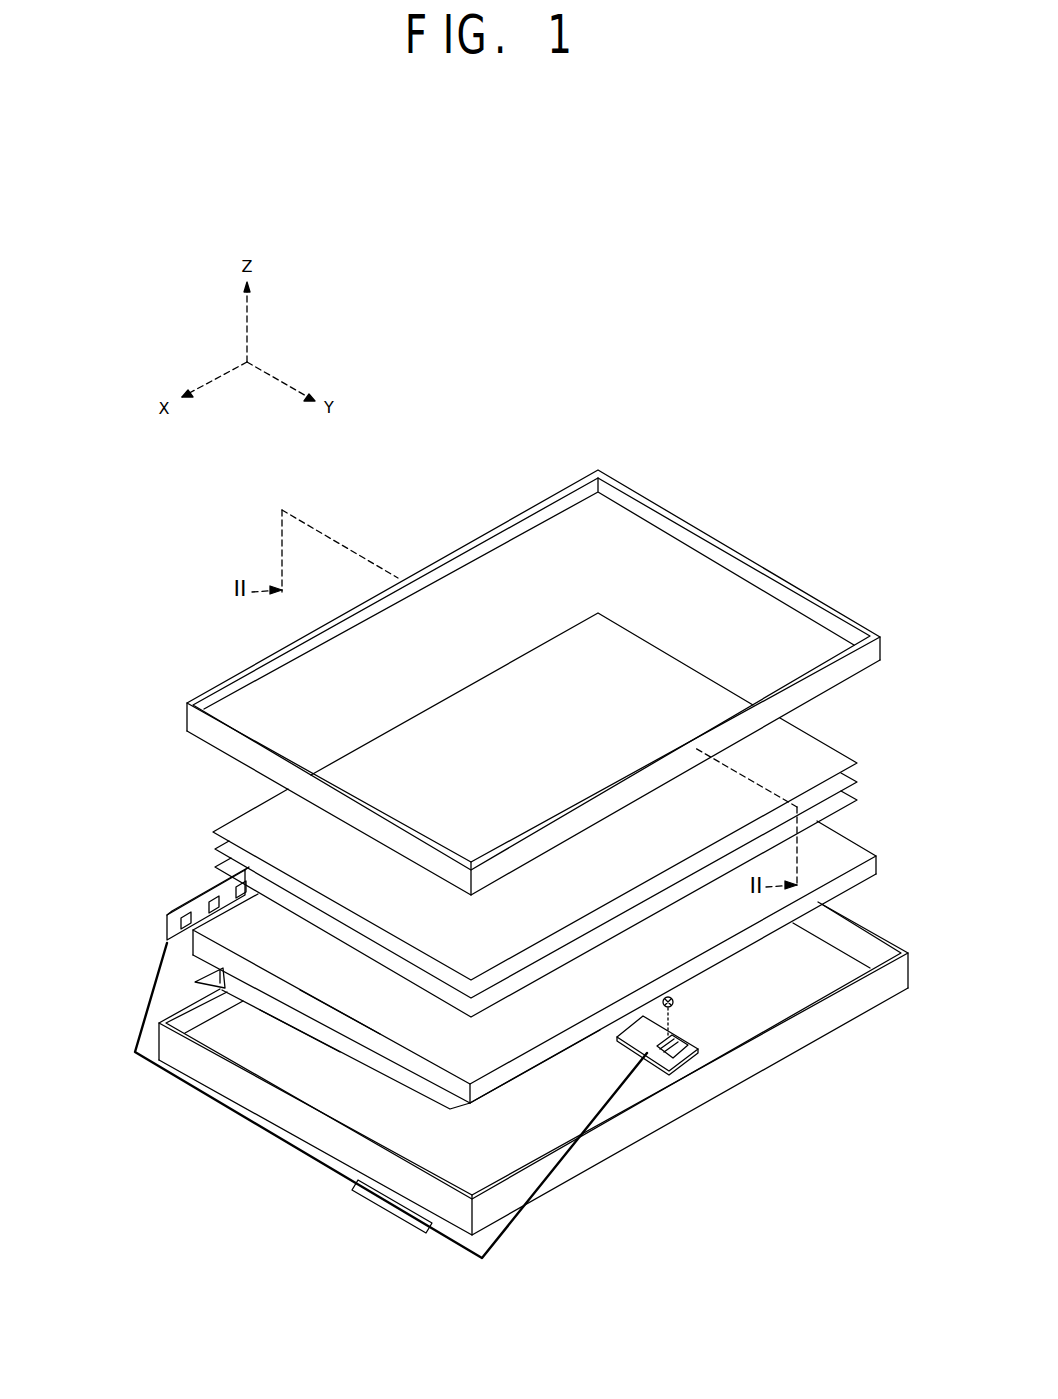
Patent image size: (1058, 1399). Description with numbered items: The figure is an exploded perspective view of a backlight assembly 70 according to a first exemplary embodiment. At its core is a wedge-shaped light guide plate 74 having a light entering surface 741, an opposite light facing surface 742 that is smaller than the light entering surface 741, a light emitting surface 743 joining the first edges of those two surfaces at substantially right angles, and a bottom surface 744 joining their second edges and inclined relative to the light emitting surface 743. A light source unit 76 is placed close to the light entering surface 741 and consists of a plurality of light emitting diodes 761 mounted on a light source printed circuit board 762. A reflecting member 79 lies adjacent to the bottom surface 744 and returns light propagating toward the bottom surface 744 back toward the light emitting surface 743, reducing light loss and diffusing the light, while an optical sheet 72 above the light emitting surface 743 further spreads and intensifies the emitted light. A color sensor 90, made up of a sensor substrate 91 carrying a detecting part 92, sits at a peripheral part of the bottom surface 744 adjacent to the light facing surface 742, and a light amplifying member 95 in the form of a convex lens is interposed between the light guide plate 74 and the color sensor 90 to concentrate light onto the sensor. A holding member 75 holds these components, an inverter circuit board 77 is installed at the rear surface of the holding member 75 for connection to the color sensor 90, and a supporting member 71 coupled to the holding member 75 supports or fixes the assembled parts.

The backlight assembly 70 is at (561, 405).
The supporting member 71 is at (185, 716).
The optical sheet 72 is at (215, 867).
The light guide plate 74 is at (478, 1058).
The light entering surface 741 is at (193, 984).
The light facing surface 742 is at (493, 1090).
The light emitting surface 743 is at (375, 1013).
The bottom surface 744 is at (415, 1090).
The holding member 75 is at (413, 1203).
The light source unit 76 is at (137, 921).
The light emitting diodes 761 is at (167, 936).
The light source printed circuit board 762 is at (167, 917).
The inverter circuit board 77 is at (438, 1232).
The reflecting member 79 is at (302, 1040).
The color sensor 90 is at (725, 1115).
The sensor substrate 91 is at (669, 1072).
The detecting part 92 is at (690, 1062).
The light amplifying member 95 is at (676, 1006).